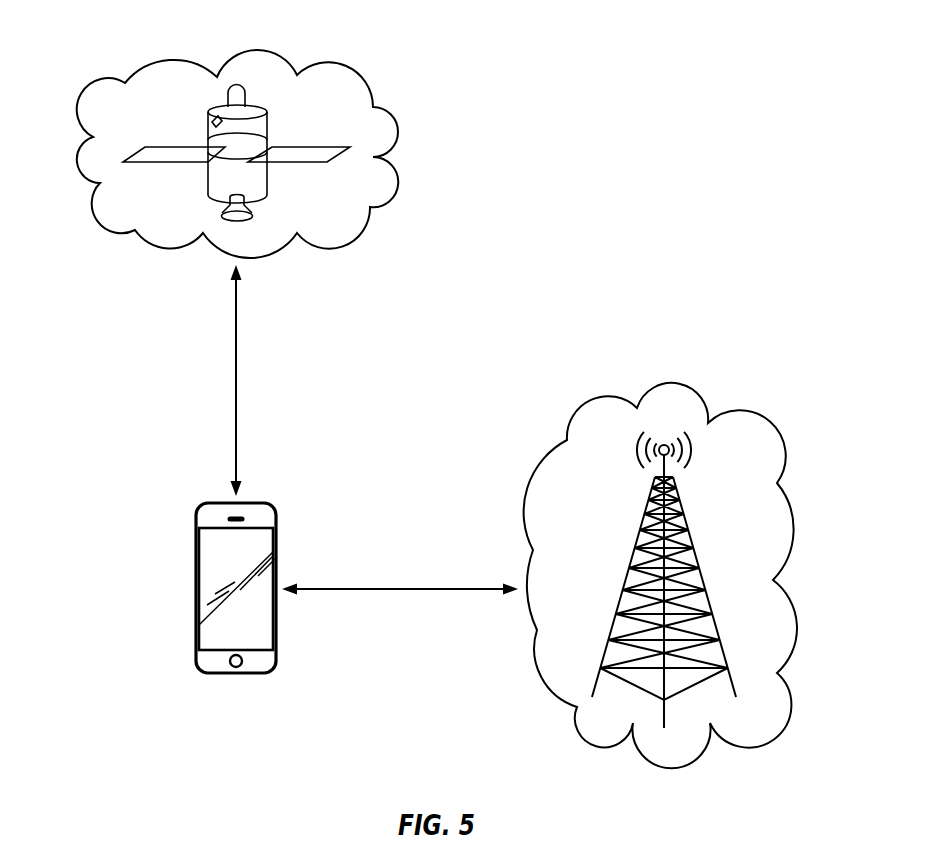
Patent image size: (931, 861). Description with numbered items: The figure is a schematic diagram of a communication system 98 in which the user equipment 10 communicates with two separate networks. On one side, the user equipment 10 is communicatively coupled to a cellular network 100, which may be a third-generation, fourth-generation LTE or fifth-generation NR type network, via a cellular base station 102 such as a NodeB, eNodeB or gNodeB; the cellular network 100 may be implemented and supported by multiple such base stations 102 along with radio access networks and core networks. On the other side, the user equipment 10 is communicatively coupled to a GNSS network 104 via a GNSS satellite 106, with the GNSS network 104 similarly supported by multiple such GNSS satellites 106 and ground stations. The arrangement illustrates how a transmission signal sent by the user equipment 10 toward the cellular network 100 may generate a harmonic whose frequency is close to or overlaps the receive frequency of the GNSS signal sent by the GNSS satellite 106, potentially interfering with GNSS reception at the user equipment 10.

The communication system 98 is at (647, 70).
The GNSS network 104 is at (257, 50).
The GNSS satellite 106 is at (208, 131).
The user equipment 10 is at (196, 589).
The cellular network 100 is at (668, 383).
The cellular base station 102 is at (638, 560).